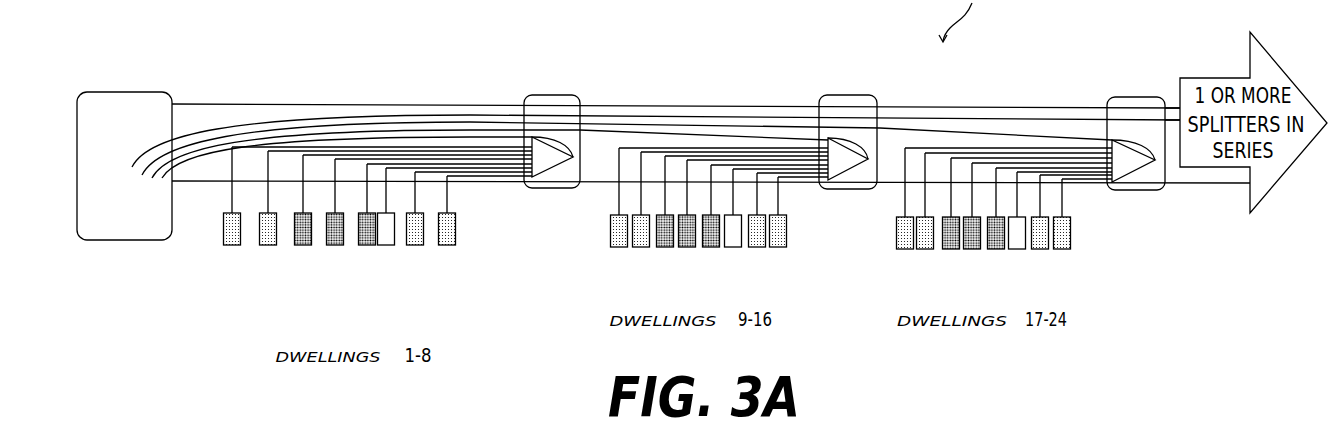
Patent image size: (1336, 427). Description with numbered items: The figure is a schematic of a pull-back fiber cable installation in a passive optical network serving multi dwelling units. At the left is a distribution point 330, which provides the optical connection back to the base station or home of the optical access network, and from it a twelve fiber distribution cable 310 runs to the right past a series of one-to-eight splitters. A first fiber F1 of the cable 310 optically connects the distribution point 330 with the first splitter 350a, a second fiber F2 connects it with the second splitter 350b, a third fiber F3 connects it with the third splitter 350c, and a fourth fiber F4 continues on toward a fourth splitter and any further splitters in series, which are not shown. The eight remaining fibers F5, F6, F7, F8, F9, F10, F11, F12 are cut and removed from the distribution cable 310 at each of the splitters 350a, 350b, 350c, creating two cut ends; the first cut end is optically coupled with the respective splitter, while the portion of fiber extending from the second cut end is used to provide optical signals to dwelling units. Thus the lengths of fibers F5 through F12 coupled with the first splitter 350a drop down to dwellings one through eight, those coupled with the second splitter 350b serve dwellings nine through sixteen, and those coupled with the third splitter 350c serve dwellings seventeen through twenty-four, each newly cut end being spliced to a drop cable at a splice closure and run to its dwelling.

The distribution point 330 is at (119, 92).
The twelve fiber distribution cable 310 is at (933, 108).
The first splitter 350a is at (557, 95).
The second splitter 350b is at (868, 95).
The third splitter 350c is at (1140, 97).
The first fiber F1 is at (480, 130).
The second fiber F2 is at (604, 131).
The third fiber F3 is at (982, 127).
The fourth fiber F4 is at (1058, 118).
The fifth fiber F5 is at (232, 200).
The sixth fiber F6 is at (268, 200).
The seventh fiber F7 is at (303, 200).
The eighth fiber F8 is at (335, 200).
The ninth fiber F9 is at (367, 200).
The tenth fiber F10 is at (386, 200).
The eleventh fiber F11 is at (415, 200).
The twelfth fiber F12 is at (448, 199).